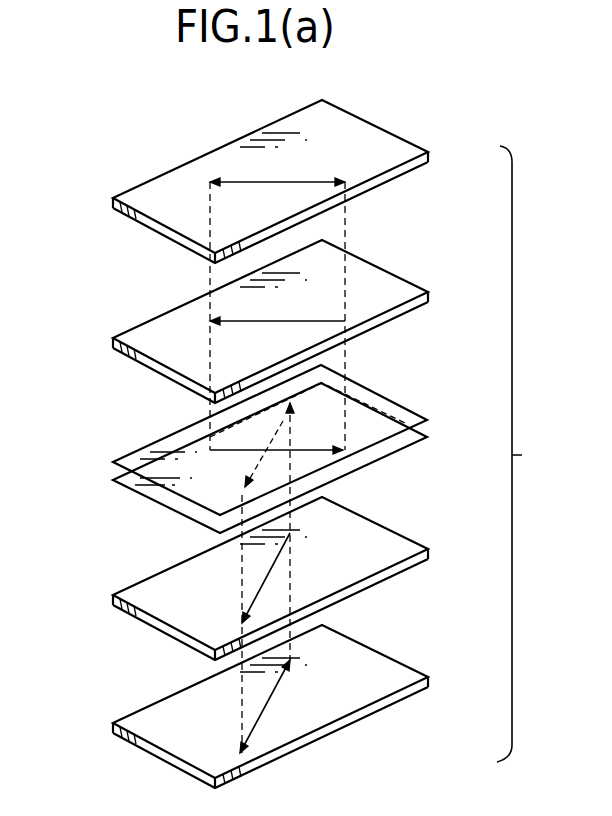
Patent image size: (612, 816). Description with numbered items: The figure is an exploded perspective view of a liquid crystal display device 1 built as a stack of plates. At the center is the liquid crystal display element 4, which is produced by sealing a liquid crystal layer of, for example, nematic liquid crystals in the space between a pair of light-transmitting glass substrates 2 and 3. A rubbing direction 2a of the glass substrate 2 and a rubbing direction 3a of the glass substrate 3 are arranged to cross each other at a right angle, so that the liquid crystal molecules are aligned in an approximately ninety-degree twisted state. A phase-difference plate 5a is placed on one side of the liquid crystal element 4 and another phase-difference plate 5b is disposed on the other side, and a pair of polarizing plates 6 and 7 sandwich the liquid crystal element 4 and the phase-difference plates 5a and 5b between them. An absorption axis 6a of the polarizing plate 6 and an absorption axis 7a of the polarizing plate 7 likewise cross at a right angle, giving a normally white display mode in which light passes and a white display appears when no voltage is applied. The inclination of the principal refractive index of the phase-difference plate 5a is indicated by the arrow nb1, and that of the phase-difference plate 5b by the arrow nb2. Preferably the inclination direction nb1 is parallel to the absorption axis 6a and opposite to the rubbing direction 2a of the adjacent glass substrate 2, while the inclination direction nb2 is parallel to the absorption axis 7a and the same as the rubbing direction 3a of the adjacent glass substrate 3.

The liquid crystal display device 1 is at (521, 454).
The glass substrate 2 is at (155, 443).
The rubbing direction 2a is at (317, 452).
The glass substrate 3 is at (148, 497).
The rubbing direction 3a is at (283, 421).
The liquid crystal display element 4 is at (101, 453).
The phase-difference plate 5a is at (113, 342).
The phase-difference plate 5b is at (113, 598).
The polarizing plate 6 is at (113, 202).
The absorption axis 6a is at (320, 180).
The polarizing plate 7 is at (113, 726).
The absorption axis 7a is at (280, 687).
The inclination direction of principal refractive index nb1 is at (322, 320).
The inclination direction of principal refractive index nb2 is at (283, 560).